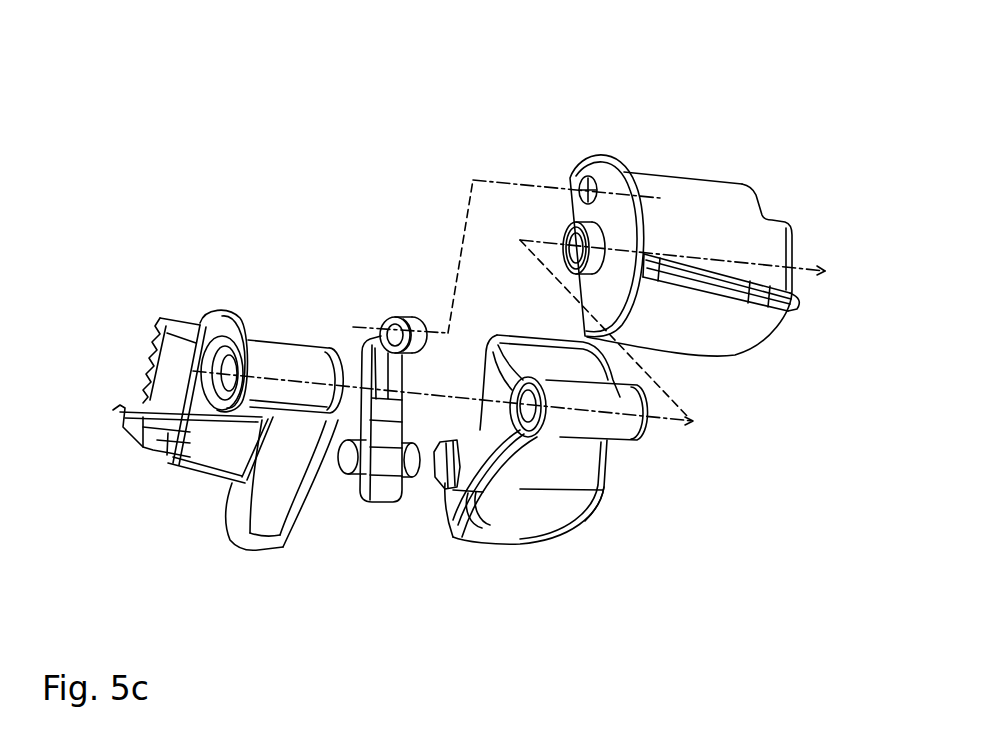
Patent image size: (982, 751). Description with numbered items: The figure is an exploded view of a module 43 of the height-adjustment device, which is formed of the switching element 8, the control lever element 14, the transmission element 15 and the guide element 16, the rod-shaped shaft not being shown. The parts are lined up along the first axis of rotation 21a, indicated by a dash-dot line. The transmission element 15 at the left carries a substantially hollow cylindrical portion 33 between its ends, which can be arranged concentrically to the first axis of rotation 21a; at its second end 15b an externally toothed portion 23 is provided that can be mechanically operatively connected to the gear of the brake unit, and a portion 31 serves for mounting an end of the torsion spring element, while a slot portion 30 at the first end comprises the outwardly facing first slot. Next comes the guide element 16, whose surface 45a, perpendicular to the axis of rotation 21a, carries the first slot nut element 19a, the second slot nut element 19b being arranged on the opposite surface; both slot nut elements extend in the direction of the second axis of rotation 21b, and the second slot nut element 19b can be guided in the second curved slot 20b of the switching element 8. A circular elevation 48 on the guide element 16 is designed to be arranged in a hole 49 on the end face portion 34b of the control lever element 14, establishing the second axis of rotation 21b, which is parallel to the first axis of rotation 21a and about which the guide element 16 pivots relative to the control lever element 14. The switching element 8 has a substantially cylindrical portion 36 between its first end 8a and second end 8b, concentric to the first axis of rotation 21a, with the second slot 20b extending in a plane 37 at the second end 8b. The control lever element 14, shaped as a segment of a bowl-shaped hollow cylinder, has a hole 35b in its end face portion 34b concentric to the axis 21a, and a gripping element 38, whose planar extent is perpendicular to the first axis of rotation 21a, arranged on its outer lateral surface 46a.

The switching element 8 is at (537, 527).
The first end of the switching element 8a is at (606, 487).
The second end of the switching element 8b is at (500, 385).
The control lever element 14 is at (737, 190).
The transmission element 15 is at (205, 453).
The second end of the transmission element 15b is at (124, 396).
The guide element 16 is at (388, 483).
The first slot nut element 19a is at (352, 472).
The second slot nut element 19b is at (410, 472).
The second curved slot 20b is at (457, 513).
The first axis of rotation 21a is at (826, 266).
The second axis of rotation 21b is at (540, 181).
The externally toothed portion 23 is at (163, 330).
The slot portion 30 is at (240, 533).
The portion for mounting an end of the torsion spring element 31 is at (113, 422).
The substantially hollow cylindrical portion 33 is at (277, 348).
The end face portion 34b is at (612, 203).
The hole 35b is at (566, 228).
The substantially cylindrical portion 36 is at (637, 430).
The plane 37 is at (483, 500).
The gripping element 38 is at (773, 312).
The module 43 is at (758, 66).
The surface of the guide element 45a is at (365, 363).
The outer lateral surface 46a is at (686, 223).
The circular elevation 48 is at (383, 320).
The hole 49 is at (570, 167).